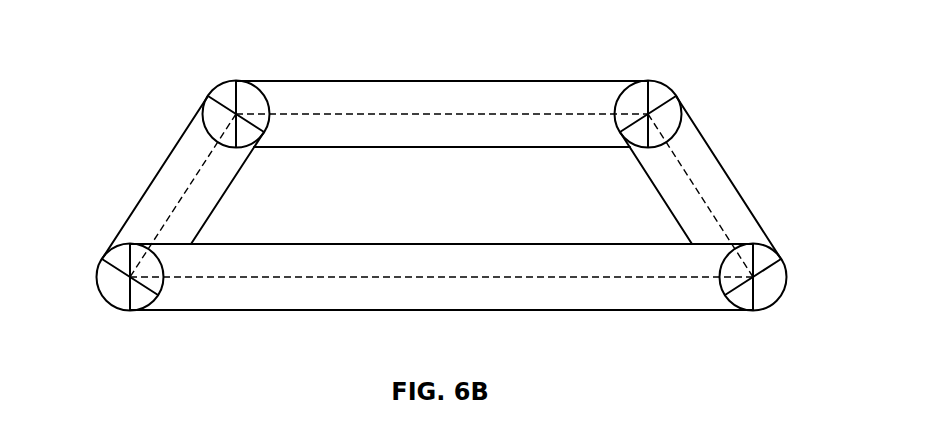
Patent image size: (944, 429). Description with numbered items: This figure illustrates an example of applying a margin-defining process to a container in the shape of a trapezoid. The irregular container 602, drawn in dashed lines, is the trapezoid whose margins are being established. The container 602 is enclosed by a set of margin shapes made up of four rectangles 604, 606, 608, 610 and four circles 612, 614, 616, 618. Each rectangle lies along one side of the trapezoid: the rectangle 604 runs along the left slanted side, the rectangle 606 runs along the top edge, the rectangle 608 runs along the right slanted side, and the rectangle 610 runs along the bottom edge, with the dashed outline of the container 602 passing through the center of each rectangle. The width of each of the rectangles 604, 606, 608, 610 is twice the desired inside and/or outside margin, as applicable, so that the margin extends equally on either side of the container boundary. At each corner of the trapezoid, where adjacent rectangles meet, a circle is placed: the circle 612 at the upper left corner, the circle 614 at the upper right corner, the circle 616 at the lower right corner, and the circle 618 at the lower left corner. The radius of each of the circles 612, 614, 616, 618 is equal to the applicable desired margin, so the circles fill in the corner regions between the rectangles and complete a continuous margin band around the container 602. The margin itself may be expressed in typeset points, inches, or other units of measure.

The irregular container 602 is at (497, 113).
The rectangle 604 is at (160, 165).
The rectangle 606 is at (345, 80).
The rectangle 608 is at (723, 163).
The rectangle 610 is at (340, 243).
The circle 612 is at (217, 85).
The circle 614 is at (662, 84).
The circle 616 is at (787, 274).
The circle 618 is at (97, 284).